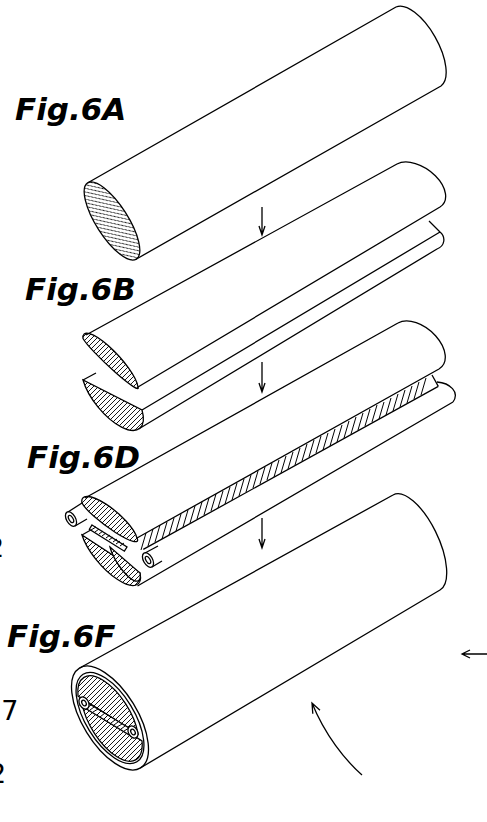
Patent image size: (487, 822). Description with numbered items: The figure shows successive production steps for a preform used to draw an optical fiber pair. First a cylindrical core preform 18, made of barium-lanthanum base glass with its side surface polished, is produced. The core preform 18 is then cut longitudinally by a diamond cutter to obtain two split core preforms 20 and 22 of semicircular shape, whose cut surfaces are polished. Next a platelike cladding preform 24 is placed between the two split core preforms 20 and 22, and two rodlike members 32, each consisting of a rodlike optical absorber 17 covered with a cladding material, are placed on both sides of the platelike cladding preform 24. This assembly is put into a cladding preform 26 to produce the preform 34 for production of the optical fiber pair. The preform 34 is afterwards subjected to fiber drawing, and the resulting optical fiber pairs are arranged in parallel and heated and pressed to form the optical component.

In FIG. 6A, the core preform 18 is at (180, 128).
In FIG. 6B, the split core preform 20 is at (337, 210).
In FIG. 6D, the split core preform 20 is at (425, 362).
In FIG. 6F, the split core preform 20 is at (110, 688).
In FIG. 6B, the split core preform 22 is at (412, 260).
In FIG. 6D, the split core preform 22 is at (82, 540).
In FIG. 6F, the split core preform 22 is at (100, 743).
In FIG. 6D, the rodlike optical absorber 17 is at (160, 562).
In FIG. 6F, the rodlike optical absorber 17 is at (148, 733).
In FIG. 6D, the platelike cladding preform 24 is at (110, 572).
In FIG. 6F, the platelike cladding preform 24 is at (80, 717).
In FIG. 6D, the rodlike member 32 is at (295, 478).
In FIG. 6F, the rodlike member 32 is at (140, 765).
In FIG. 6F, the cladding preform 26 is at (332, 640).
In FIG. 6F, the preform for production of optical fiber pair 34 is at (378, 811).